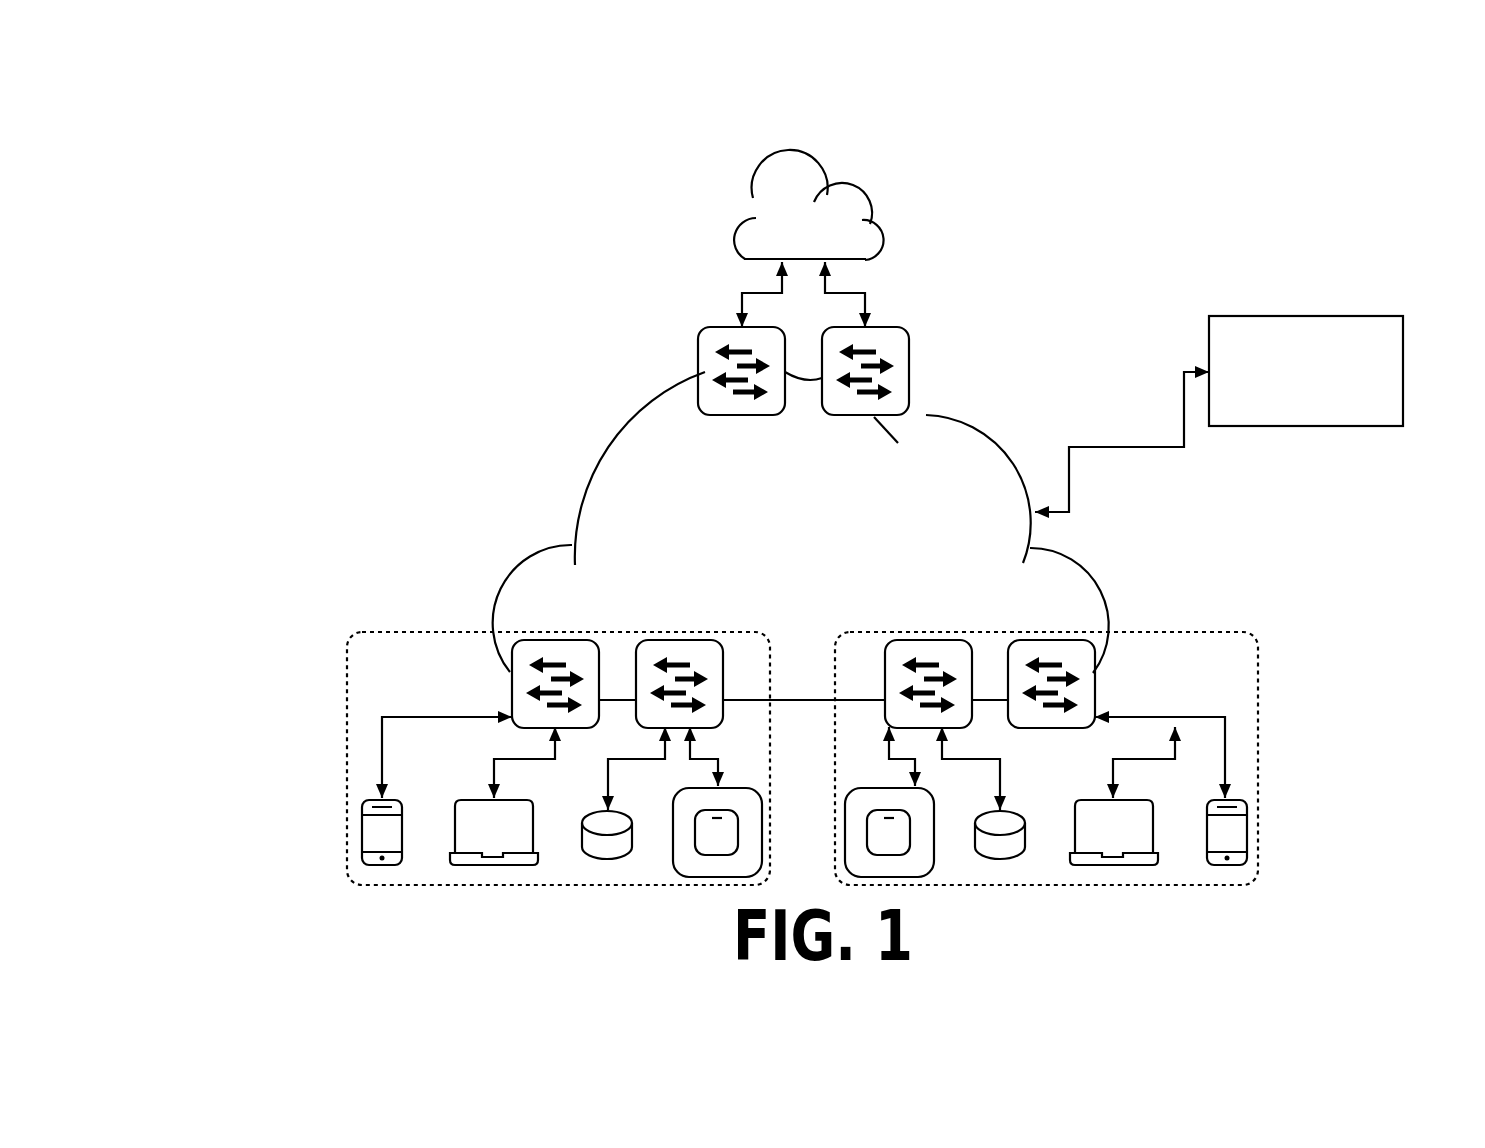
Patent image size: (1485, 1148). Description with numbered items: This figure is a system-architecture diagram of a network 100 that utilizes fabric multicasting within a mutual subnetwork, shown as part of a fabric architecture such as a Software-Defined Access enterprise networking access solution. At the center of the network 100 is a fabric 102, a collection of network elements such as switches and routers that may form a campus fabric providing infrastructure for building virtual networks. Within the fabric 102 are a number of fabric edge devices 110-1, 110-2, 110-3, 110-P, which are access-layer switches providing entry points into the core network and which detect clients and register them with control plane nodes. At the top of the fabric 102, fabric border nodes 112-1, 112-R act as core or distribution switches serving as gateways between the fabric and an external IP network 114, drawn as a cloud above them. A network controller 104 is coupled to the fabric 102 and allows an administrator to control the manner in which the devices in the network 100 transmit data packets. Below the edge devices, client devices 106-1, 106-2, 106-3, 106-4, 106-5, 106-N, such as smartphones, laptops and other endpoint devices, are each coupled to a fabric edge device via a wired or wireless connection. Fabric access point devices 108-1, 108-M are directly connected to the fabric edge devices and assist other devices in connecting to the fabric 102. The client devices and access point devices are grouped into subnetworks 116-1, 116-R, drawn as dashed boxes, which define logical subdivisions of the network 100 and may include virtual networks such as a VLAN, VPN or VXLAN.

The network 100 is at (195, 70).
The fabric 102 is at (801, 522).
The network controller 104 is at (1219, 414).
The client device 106-1 is at (370, 832).
The client device 106-2 is at (463, 858).
The client device 106-3 is at (607, 843).
The client device 106-4 is at (1000, 845).
The client device 106-5 is at (1143, 858).
The client device 106-N is at (1237, 832).
The fabric access point device 108-1 is at (693, 870).
The fabric access point device 108-M is at (915, 870).
The fabric edge device 110-1 is at (523, 690).
The fabric edge device 110-2 is at (640, 648).
The fabric edge device 110-3 is at (961, 653).
The fabric edge device 110-P is at (1085, 688).
The fabric border node 112-1 is at (705, 372).
The fabric border node 112-R is at (908, 372).
The IP network 114 is at (742, 240).
The subnetwork 116-1 is at (378, 632).
The subnetwork 116-R is at (1227, 632).